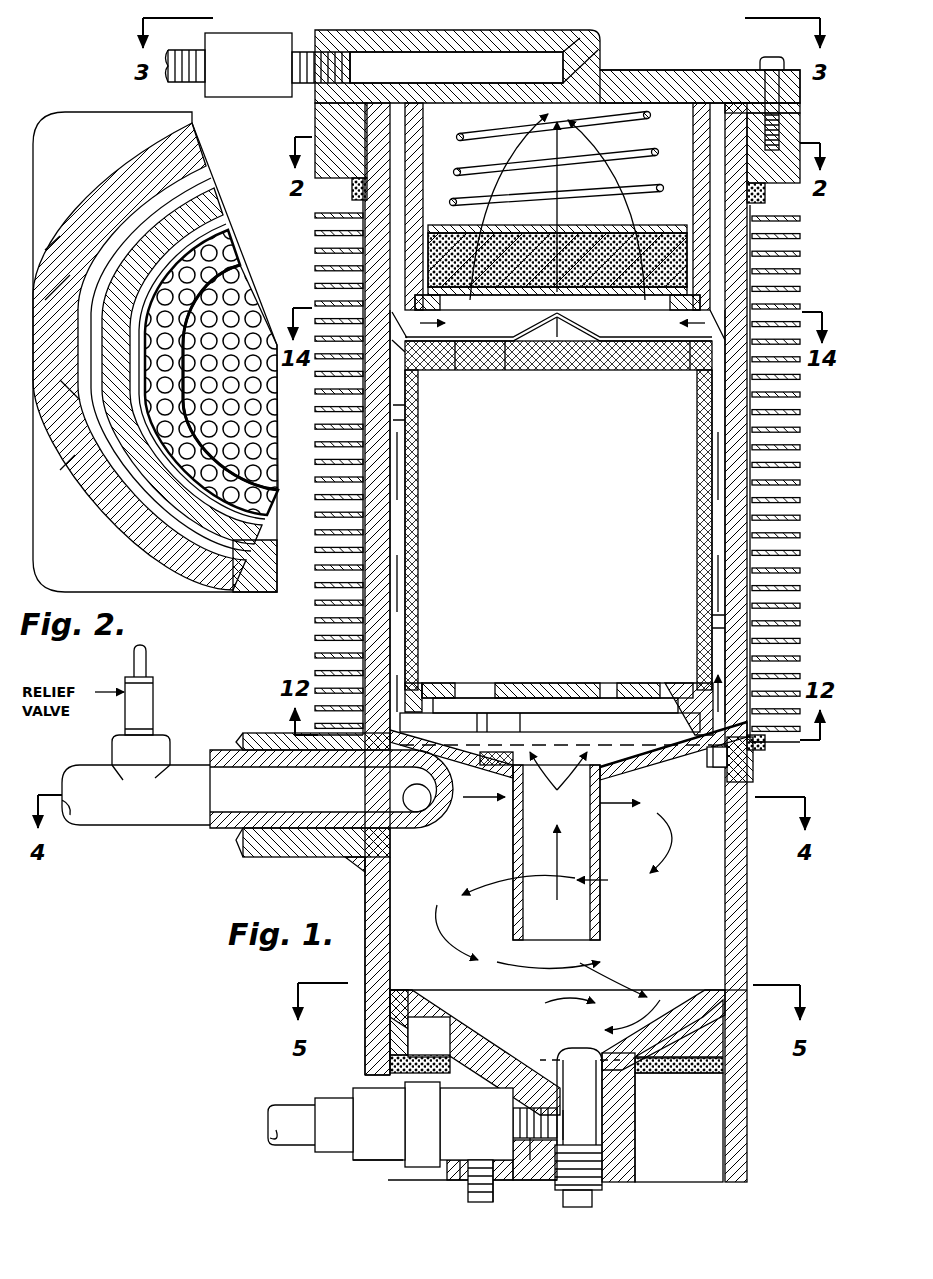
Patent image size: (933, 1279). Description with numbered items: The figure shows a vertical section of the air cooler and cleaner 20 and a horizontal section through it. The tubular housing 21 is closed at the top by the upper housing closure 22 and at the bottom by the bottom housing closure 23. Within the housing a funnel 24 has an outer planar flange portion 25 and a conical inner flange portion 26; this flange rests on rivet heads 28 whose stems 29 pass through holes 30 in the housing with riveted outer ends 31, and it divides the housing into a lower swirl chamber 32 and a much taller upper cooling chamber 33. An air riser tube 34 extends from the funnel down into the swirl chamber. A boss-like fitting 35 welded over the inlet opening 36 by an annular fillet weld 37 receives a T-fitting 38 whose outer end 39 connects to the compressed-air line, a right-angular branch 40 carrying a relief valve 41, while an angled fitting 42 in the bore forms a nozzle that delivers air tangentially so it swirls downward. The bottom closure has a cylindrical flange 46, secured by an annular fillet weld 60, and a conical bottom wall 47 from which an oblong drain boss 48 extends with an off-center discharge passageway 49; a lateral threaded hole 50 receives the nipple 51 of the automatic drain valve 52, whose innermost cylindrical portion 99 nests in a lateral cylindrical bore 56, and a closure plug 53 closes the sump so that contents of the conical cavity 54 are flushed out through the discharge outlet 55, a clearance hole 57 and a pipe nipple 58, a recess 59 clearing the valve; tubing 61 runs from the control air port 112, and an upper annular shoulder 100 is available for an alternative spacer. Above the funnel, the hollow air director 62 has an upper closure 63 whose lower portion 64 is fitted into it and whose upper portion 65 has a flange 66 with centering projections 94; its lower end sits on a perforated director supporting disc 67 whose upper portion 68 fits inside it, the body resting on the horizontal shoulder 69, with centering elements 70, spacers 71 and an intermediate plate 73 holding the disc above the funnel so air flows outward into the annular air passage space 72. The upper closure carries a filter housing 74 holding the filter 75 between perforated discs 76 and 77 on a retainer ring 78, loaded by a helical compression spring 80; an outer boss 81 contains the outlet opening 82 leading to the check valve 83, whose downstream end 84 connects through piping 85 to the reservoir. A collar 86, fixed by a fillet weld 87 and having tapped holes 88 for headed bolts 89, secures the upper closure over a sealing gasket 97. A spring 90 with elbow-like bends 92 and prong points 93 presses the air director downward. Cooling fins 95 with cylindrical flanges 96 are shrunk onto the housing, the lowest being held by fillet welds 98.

In FIG. 1, the air cooler and cleaner 20 is at (238, 866).
In FIG. 1, the tubular housing 21 is at (738, 262).
In FIG. 2, the tubular housing 21 is at (205, 185).
In FIG. 1, the upper housing closure 22 is at (665, 80).
In FIG. 1, the bottom housing closure 23 is at (640, 1082).
In FIG. 1, the funnel 24 is at (612, 772).
In FIG. 1, the outer planar flange portion 25 is at (698, 745).
In FIG. 1, the conical inner flange portion 26 is at (700, 752).
In FIG. 1, the rivet heads 28 is at (503, 764).
In FIG. 1, the rivet stems 29 is at (720, 775).
In FIG. 1, the holes 30 is at (748, 780).
In FIG. 1, the outer ends of rivets 31 is at (735, 760).
In FIG. 1, the lower swirl chamber 32 is at (376, 900).
In FIG. 1, the upper cooling chamber 33 is at (620, 360).
In FIG. 1, the air riser tube 34 is at (600, 851).
In FIG. 1, the boss-like fitting 35 is at (305, 848).
In FIG. 1, the inlet opening 36 is at (392, 842).
In FIG. 1, the annular fillet weld 37 is at (360, 866).
In FIG. 1, the T-fitting 38 is at (172, 762).
In FIG. 1, the outer end of T-fitting 39 is at (105, 825).
In FIG. 1, the right-angular branch 40 is at (163, 748).
In FIG. 1, the relief valve 41 is at (155, 690).
In FIG. 1, the 45°-angled fitting 42 is at (440, 822).
In FIG. 1, the cylindrical flange 46 is at (396, 1027).
In FIG. 1, the conical bottom wall 47 is at (430, 1025).
In FIG. 1, the oblong drain boss 48 is at (622, 1156).
In FIG. 1, the vertical discharge passageway 49 is at (579, 1096).
In FIG. 1, the lateral threaded hole 50 is at (538, 1140).
In FIG. 1, the nipple 51 is at (560, 1120).
In FIG. 1, the automatic drain valve 52 is at (408, 1168).
In FIG. 1, the closure plug 53 is at (603, 1185).
In FIG. 1, the conical cavity 54 is at (535, 998).
In FIG. 1, the discharge outlet 55 is at (482, 1162).
In FIG. 1, the lateral cylindrical bore 56 is at (497, 1092).
In FIG. 1, the vertical clearance hole 57 is at (470, 1192).
In FIG. 1, the pipe nipple 58 is at (492, 1196).
In FIG. 1, the recess 59 is at (370, 1164).
In FIG. 1, the annular fillet weld 60 is at (683, 1075).
In FIG. 1, the pipe or tubing 61 is at (290, 1108).
In FIG. 1, the air director 62 is at (416, 478).
In FIG. 1, the upper closure 63 is at (485, 372).
In FIG. 1, the lower portion of closure 64 is at (462, 370).
In FIG. 1, the upper portion of closure 65 is at (512, 370).
In FIG. 1, the flange 66 is at (690, 356).
In FIG. 1, the director supporting disc 67 is at (560, 686).
In FIG. 1, the upper portion of disc 68 is at (690, 690).
In FIG. 1, the horizontal shoulder 69 is at (425, 688).
In FIG. 1, the air director centering elements 70 is at (760, 690).
In FIG. 1, the spacers 71 is at (510, 714).
In FIG. 1, the annular air passage space 72 is at (398, 505).
In FIG. 2, the annular air passage space 72 is at (180, 485).
In FIG. 1, the spacer plate 73 is at (598, 718).
In FIG. 1, the filter housing 74 is at (415, 140).
In FIG. 2, the filter housing 74 is at (216, 210).
In FIG. 1, the filter 75 is at (677, 233).
In FIG. 1, the upper perforated disc 76 is at (470, 226).
In FIG. 2, the upper perforated disc 76 is at (229, 242).
In FIG. 1, the lower perforated disc 77 is at (628, 305).
In FIG. 1, the annular retainer ring 78 is at (512, 310).
In FIG. 1, the helical compression spring 80 is at (649, 147).
In FIG. 2, the helical compression spring 80 is at (236, 265).
In FIG. 1, the outer boss 81 is at (594, 32).
In FIG. 1, the outlet opening 82 is at (566, 78).
In FIG. 1, the check valve 83 is at (268, 36).
In FIG. 1, the downstream end of check valve 84 is at (203, 45).
In FIG. 1, the piping or tubing 85 is at (198, 76).
In FIG. 1, the collar 86 is at (325, 118).
In FIG. 2, the collar 86 is at (110, 500).
In FIG. 1, the fillet weld 87 is at (356, 188).
In FIG. 1, the tapped holes 88 is at (782, 128).
In FIG. 1, the headed bolts 89 is at (770, 90).
In FIG. 1, the spring 90 is at (558, 322).
In FIG. 1, the elbow-like bends 92 is at (735, 335).
In FIG. 2, the elbow-like bends 92 is at (72, 230).
In FIG. 1, the points of prongs 93 is at (728, 292).
In FIG. 1, the centering projections 94 is at (412, 358).
In FIG. 2, the centering projections 94 is at (60, 300).
In FIG. 1, the cooling fins 95 is at (800, 468).
In FIG. 2, the cooling fins 95 is at (68, 126).
In FIG. 1, the cylindrical flanges 96 is at (412, 428).
In FIG. 2, the cylindrical flanges 96 is at (230, 575).
In FIG. 1, the sealing gasket 97 is at (790, 108).
In FIG. 1, the fillet welds 98 is at (760, 740).
In FIG. 1, the innermost cylindrical portion of drain valve 99 is at (450, 1118).
In FIG. 1, the upper annular shoulder 100 is at (710, 990).
In FIG. 1, the control air port 112 is at (325, 1142).